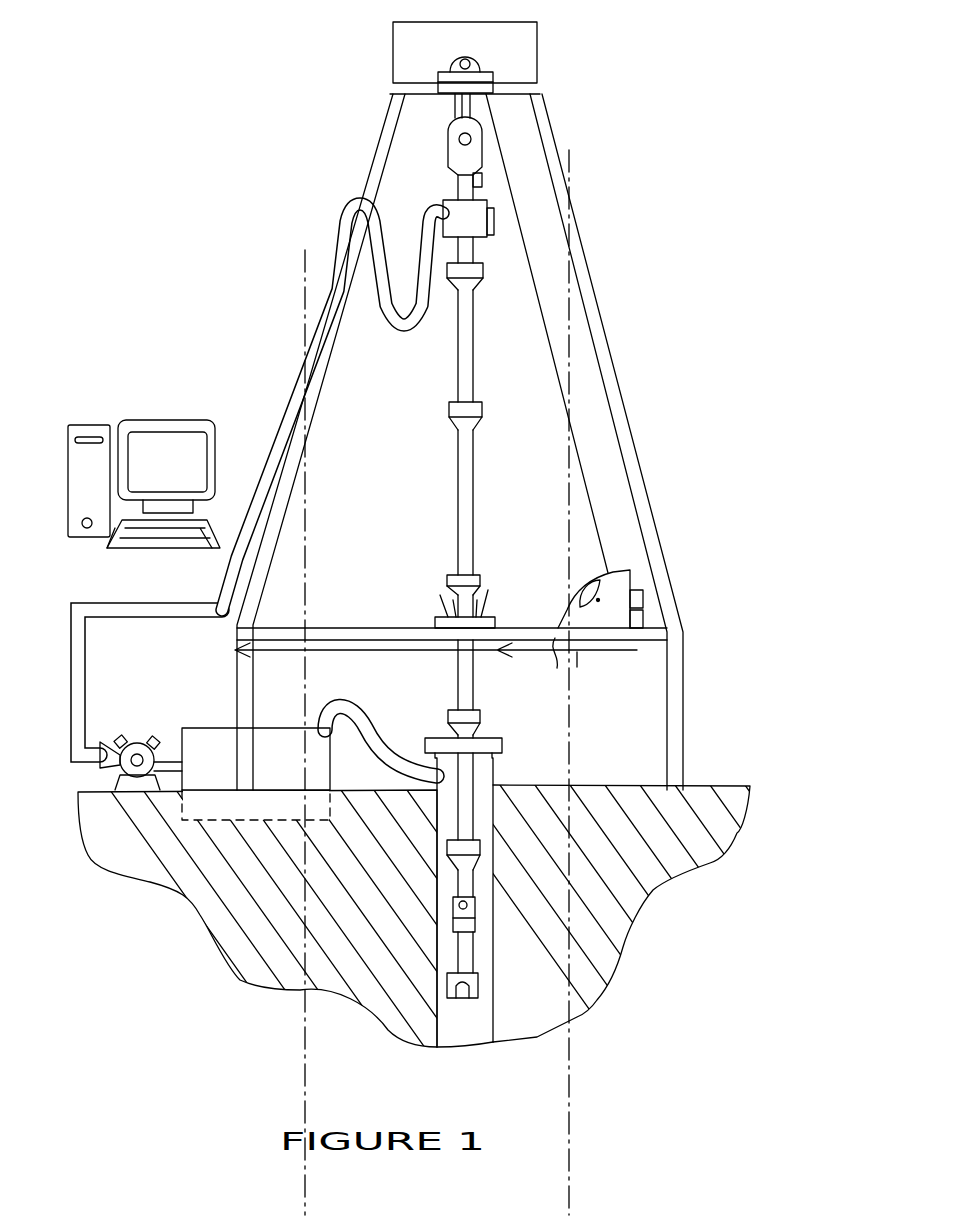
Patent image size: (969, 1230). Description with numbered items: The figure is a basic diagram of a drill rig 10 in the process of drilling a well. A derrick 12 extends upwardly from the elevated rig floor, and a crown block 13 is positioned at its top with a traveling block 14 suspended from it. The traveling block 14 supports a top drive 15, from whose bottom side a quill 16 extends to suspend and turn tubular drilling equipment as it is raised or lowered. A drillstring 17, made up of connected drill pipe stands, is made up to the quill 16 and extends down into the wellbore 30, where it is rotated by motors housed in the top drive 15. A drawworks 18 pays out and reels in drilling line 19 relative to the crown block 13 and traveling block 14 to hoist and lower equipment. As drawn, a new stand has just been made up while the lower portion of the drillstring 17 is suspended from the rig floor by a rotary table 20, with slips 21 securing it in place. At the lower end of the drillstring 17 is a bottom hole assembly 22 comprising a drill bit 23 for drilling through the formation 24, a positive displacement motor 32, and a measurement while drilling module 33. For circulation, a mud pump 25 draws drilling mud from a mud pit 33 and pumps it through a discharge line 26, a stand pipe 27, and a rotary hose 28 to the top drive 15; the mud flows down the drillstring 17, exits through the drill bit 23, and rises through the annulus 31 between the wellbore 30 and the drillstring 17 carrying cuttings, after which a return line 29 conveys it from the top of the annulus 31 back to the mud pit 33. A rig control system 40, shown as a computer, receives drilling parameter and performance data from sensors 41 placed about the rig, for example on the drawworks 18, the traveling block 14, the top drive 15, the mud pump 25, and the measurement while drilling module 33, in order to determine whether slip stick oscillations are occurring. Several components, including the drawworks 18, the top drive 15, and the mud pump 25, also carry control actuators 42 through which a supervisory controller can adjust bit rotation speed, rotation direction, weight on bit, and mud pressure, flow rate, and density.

The drill rig 10 is at (625, 145).
The derrick 12 is at (620, 394).
The crown block 13 is at (478, 62).
The traveling block 14 is at (460, 156).
The top drive 15 is at (446, 203).
The quill 16 is at (472, 248).
The drillstring 17 is at (459, 470).
The drawworks 18 is at (568, 612).
The drilling line 19 is at (565, 432).
The rotary table 20 is at (437, 618).
The slips 21 is at (484, 600).
The bottom hole assembly 22 is at (458, 952).
The drill bit 23 is at (447, 993).
The formation 24 is at (618, 952).
The mud pump 25 is at (142, 735).
The discharge line 26 is at (83, 668).
The stand pipe 27 is at (298, 335).
The rotary hose 28 is at (383, 297).
The return line 29 is at (385, 742).
The wellbore 30 is at (490, 1023).
The annulus 31 is at (447, 893).
The positive displacement motor 32 is at (496, 1042).
The measurement while drilling module 33 is at (277, 727).
The rig control system 40 is at (158, 418).
The sensors 41 is at (484, 176).
The control actuators 42 is at (487, 235).